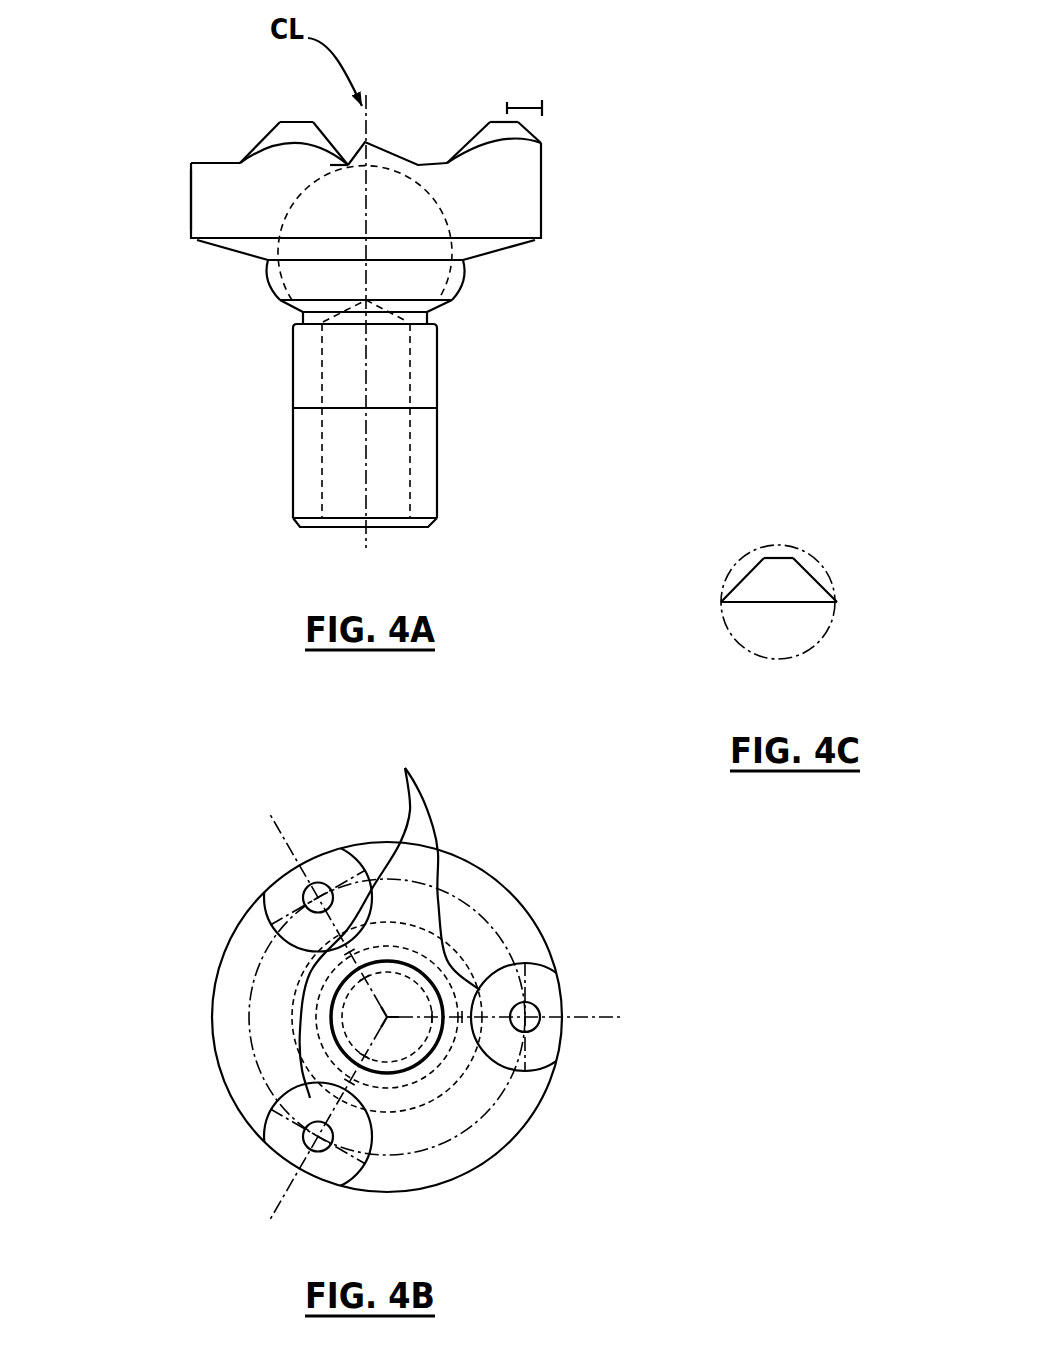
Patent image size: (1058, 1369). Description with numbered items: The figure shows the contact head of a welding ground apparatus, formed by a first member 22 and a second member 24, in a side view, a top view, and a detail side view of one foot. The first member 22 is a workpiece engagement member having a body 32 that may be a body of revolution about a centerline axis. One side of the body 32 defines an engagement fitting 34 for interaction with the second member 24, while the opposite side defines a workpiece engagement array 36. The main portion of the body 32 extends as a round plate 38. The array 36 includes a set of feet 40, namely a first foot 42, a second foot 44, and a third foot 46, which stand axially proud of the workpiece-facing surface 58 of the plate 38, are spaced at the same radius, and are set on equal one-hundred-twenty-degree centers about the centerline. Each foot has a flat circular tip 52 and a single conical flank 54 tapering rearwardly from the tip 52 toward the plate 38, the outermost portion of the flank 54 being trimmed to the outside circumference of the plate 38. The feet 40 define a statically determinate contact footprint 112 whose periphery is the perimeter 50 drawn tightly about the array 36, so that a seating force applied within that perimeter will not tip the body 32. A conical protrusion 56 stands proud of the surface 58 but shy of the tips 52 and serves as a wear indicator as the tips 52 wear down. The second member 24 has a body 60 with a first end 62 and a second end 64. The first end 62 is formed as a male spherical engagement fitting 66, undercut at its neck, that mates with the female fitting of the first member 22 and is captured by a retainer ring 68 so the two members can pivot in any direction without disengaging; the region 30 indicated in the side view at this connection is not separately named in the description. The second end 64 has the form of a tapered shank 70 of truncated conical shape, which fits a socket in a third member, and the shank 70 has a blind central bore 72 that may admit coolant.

In FIG. 4A, the first member 22 is at (636, 107).
In FIG. 4A, the second member 24 is at (547, 412).
In FIG. 4A, the neck portion 30 is at (538, 314).
In FIG. 4A, the body 32 is at (560, 210).
In FIG. 4A, the engagement fitting 34 is at (480, 270).
In FIG. 4A, the engagement array 36 is at (418, 122).
In FIG. 4B, the engagement array 36 is at (503, 843).
In FIG. 4A, the plate 38 is at (215, 196).
In FIG. 4B, the plate 38 is at (215, 990).
In FIG. 4A, the feet 40 is at (536, 100).
In FIG. 4B, the feet 40 is at (325, 867).
In FIG. 4B, the first foot 42 is at (537, 973).
In FIG. 4B, the second foot 44 is at (327, 1167).
In FIG. 4B, the third foot 46 is at (277, 897).
In FIG. 4B, the perimeter 50 is at (210, 1036).
In FIG. 4A, the tip 52 is at (293, 120).
In FIG. 4C, the tip 52 is at (780, 557).
In FIG. 4B, the tip 52 is at (303, 893).
In FIG. 4A, the flank 54 is at (258, 133).
In FIG. 4C, the flank 54 is at (815, 578).
In FIG. 4B, the flank 54 is at (247, 923).
In FIG. 4A, the protrusion 56 is at (370, 151).
In FIG. 4B, the protrusion 56 is at (402, 1045).
In FIG. 4A, the workpiece-facing surface 58 is at (204, 164).
In FIG. 4B, the workpiece-facing surface 58 is at (487, 1090).
In FIG. 4A, the body 60 is at (302, 396).
In FIG. 4A, the first end 62 is at (270, 314).
In FIG. 4A, the second end 64 is at (270, 522).
In FIG. 4A, the engagement fitting 66 is at (422, 307).
In FIG. 4A, the retainer ring 68 is at (297, 278).
In FIG. 4A, the shank 70 is at (425, 463).
In FIG. 4A, the central bore 72 is at (343, 535).
In FIG. 4B, the contact footprint 112 is at (178, 868).